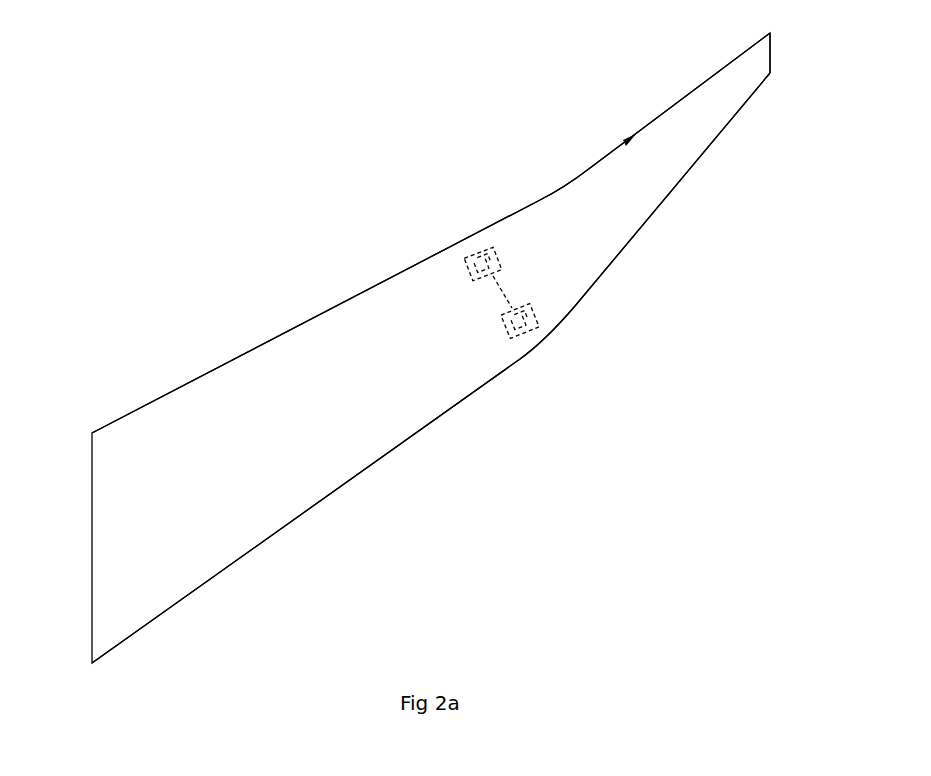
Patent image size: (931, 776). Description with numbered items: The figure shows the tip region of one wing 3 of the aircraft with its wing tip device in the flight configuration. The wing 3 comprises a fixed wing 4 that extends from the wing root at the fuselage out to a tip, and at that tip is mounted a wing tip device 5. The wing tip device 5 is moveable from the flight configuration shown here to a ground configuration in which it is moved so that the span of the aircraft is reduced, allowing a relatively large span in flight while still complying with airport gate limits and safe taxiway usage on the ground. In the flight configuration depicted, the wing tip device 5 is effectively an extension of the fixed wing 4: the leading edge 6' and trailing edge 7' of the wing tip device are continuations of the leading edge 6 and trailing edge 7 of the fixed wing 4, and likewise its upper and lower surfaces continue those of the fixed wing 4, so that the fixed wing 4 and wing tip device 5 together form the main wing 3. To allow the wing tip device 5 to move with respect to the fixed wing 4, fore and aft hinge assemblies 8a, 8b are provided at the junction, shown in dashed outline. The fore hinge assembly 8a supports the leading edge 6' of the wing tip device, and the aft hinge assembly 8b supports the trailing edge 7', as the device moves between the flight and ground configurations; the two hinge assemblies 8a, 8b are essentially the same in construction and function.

The wing 3 is at (212, 357).
The fixed wing 4 is at (236, 452).
The wing tip device 5 is at (620, 212).
The leading edge 6 is at (306, 511).
The leading edge 6' is at (645, 216).
The trailing edge 7 is at (316, 311).
The trailing edge 7' is at (619, 116).
The fore hinge assembly 8a is at (530, 335).
The aft hinge assembly 8b is at (470, 250).